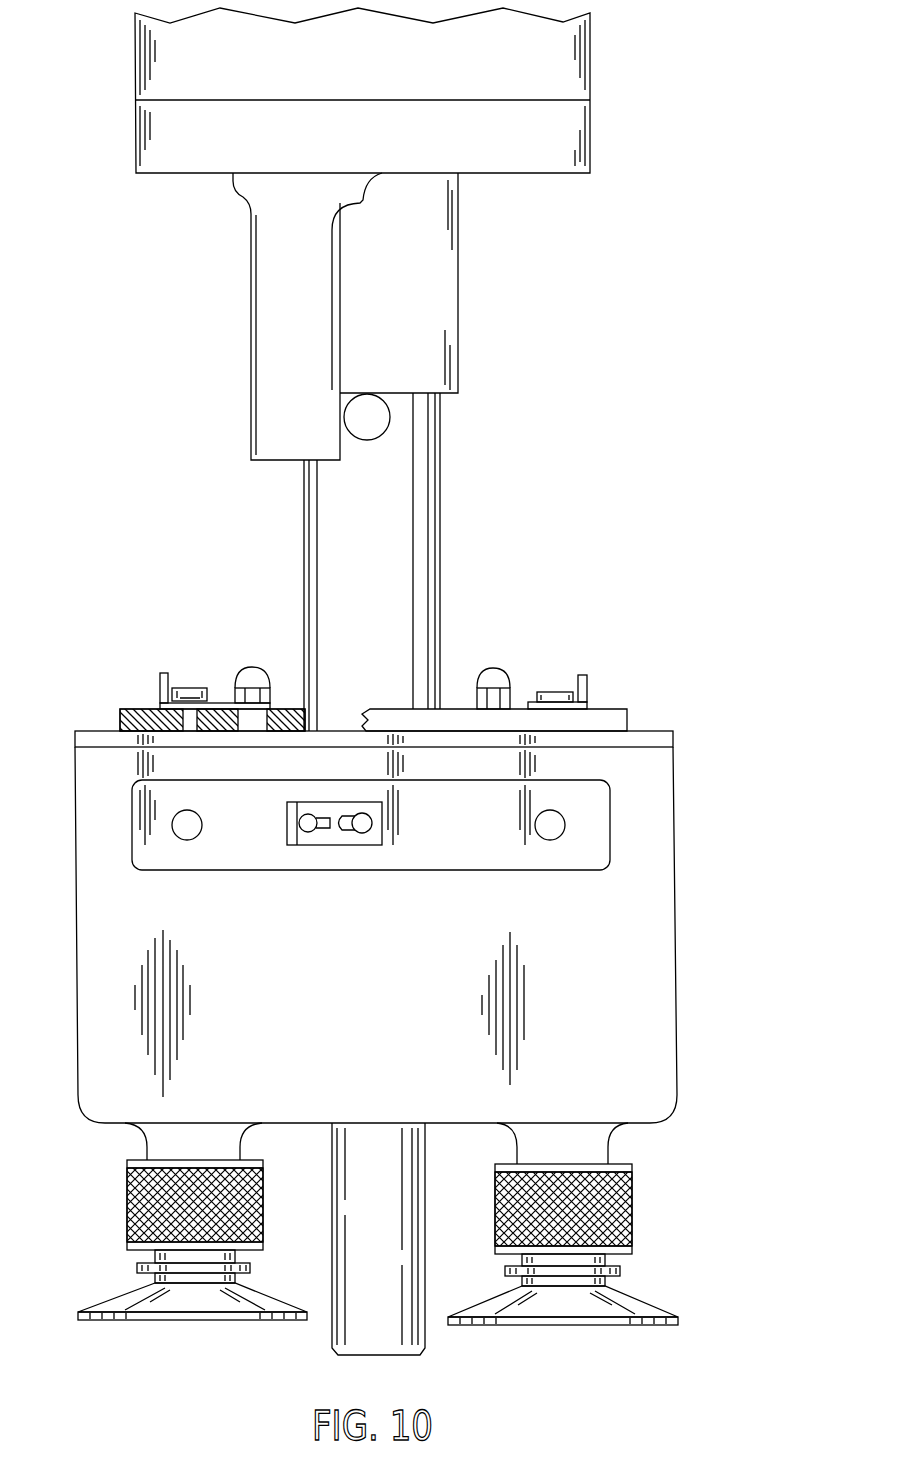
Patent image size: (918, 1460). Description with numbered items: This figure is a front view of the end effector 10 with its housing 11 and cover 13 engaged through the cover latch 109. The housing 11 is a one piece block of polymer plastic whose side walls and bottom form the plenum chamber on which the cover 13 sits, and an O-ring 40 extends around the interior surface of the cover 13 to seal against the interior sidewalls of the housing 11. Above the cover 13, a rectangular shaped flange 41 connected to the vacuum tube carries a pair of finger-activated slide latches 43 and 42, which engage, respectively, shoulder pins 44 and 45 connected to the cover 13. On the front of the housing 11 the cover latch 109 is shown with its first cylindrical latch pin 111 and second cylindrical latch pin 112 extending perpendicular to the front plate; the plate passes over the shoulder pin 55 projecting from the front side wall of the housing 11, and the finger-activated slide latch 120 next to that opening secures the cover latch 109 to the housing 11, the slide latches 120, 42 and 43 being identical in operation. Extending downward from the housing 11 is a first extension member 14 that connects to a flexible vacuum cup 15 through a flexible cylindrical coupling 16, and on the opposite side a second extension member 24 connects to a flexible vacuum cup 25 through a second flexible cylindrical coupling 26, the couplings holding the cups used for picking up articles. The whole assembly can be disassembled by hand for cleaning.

The end effector 10 is at (70, 700).
The housing 11 is at (677, 942).
The cover 13 is at (650, 742).
The first extension member 14 is at (615, 1148).
The flexible vacuum cup 15 is at (655, 1302).
The flexible cylindrical coupling 16 is at (632, 1203).
The second extension member 24 is at (142, 1138).
The flexible vacuum cup 25 is at (105, 1300).
The second flexible cylindrical coupling 26 is at (127, 1205).
The O-ring 40 is at (675, 770).
The rectangular shaped flange 41 is at (615, 722).
The finger-activated slide latch 42 is at (568, 677).
The finger-activated slide latch 43 is at (198, 677).
The shoulder pin 44 is at (247, 672).
The shoulder pin 45 is at (484, 670).
The shoulder pin 55 is at (362, 833).
The cover latch 109 is at (453, 862).
The first cylindrical latch pin 111 is at (549, 832).
The second cylindrical latch pin 112 is at (187, 832).
The finger-activated slide latch 120 is at (335, 843).